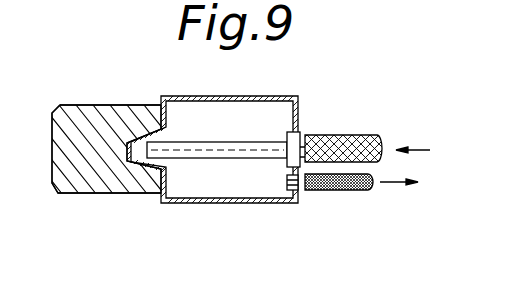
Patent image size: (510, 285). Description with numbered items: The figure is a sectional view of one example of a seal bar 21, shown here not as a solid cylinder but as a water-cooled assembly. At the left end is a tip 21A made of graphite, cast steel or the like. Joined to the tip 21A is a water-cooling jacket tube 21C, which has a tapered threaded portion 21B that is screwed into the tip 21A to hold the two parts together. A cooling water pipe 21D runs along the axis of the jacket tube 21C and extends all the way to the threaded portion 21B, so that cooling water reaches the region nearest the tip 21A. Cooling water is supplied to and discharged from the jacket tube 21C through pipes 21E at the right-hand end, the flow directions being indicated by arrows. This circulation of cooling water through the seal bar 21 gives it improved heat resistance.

The seal bar 21 is at (215, 161).
The tip 21A is at (58, 193).
The tapered threaded portion 21B is at (103, 120).
The water-cooling jacket tube 21C is at (208, 96).
The cooling water pipe 21D is at (262, 142).
The pipes 21E is at (345, 175).